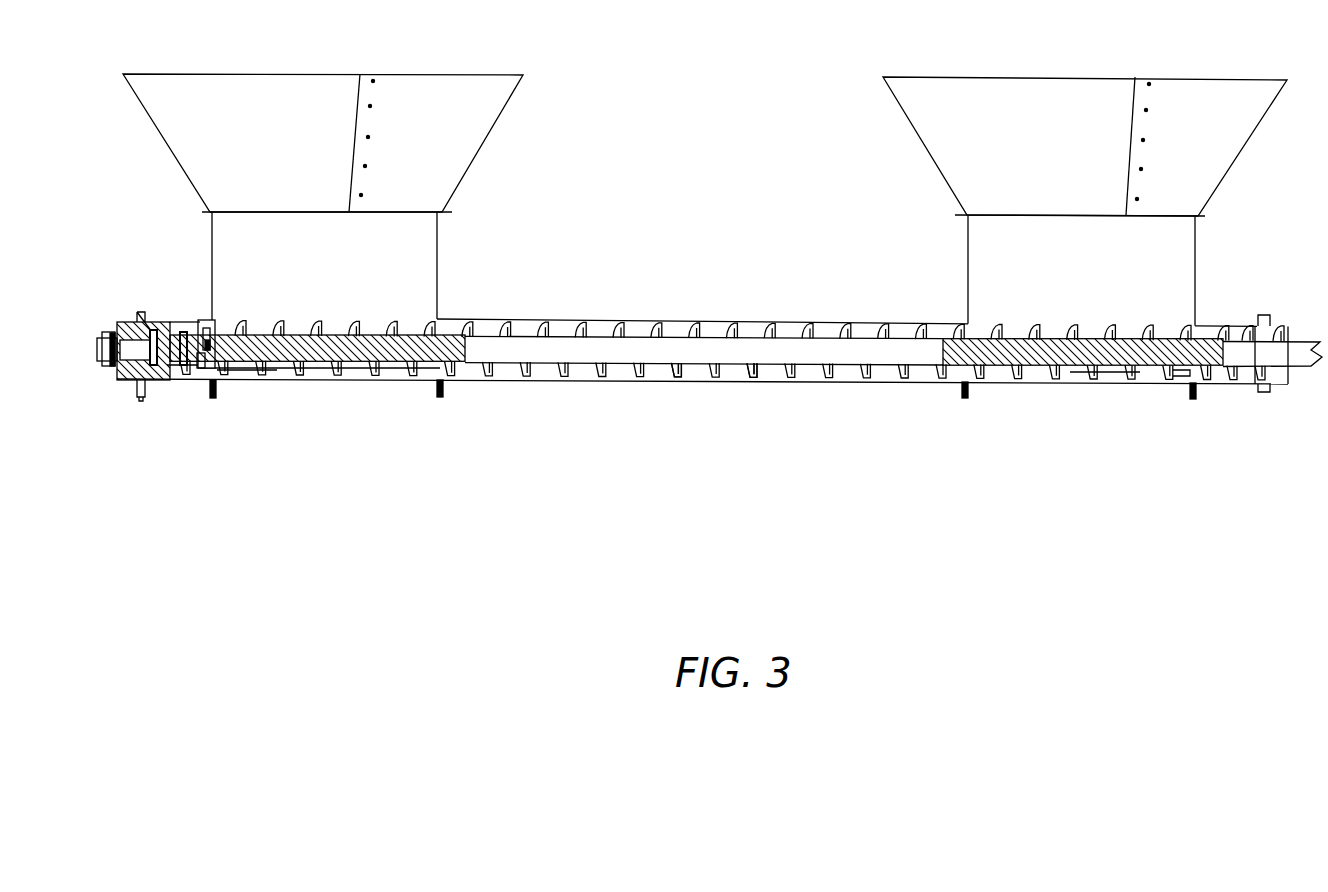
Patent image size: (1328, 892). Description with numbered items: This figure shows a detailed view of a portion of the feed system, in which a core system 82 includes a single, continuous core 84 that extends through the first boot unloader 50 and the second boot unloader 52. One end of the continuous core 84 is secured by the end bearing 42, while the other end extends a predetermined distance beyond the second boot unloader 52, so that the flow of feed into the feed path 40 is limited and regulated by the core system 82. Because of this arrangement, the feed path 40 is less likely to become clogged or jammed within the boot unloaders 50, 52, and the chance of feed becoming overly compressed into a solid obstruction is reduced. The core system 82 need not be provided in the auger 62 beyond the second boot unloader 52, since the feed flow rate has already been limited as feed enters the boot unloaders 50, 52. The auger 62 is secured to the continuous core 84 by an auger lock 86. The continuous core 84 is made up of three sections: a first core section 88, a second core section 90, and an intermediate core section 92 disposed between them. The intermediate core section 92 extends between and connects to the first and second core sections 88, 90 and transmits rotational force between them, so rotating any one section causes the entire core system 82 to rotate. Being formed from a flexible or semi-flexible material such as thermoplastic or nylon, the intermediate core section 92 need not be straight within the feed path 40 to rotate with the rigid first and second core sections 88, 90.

The feed path 40 is at (557, 288).
The end bearing 42 is at (117, 365).
The first boot unloader 50 is at (438, 243).
The second boot unloader 52 is at (1195, 253).
The auger 62 is at (683, 371).
The core system 82 is at (737, 372).
The continuous core 84 is at (746, 465).
The auger lock 86 is at (198, 320).
The first core section 88 is at (285, 348).
The second core section 90 is at (1108, 353).
The intermediate core section 92 is at (513, 350).